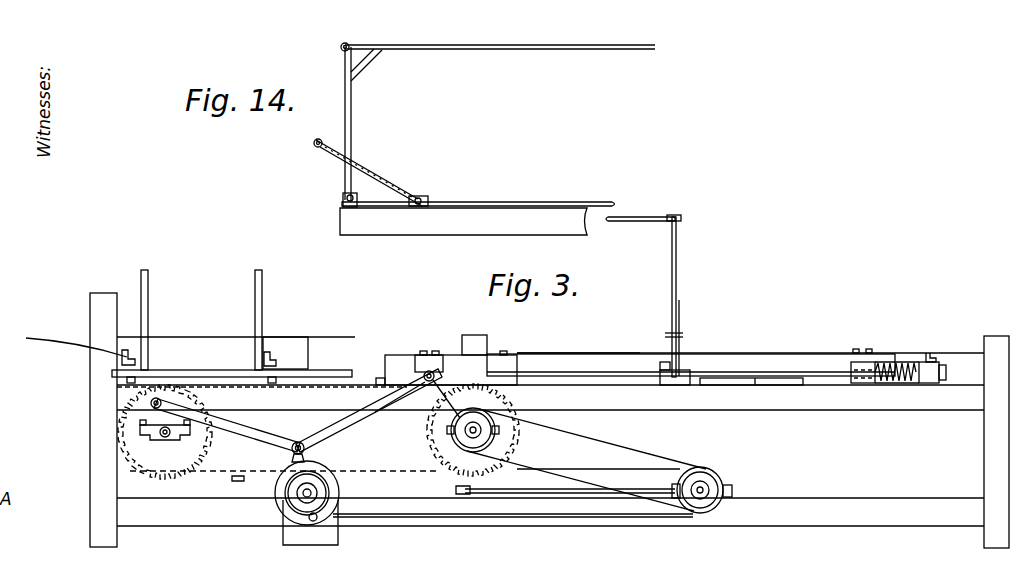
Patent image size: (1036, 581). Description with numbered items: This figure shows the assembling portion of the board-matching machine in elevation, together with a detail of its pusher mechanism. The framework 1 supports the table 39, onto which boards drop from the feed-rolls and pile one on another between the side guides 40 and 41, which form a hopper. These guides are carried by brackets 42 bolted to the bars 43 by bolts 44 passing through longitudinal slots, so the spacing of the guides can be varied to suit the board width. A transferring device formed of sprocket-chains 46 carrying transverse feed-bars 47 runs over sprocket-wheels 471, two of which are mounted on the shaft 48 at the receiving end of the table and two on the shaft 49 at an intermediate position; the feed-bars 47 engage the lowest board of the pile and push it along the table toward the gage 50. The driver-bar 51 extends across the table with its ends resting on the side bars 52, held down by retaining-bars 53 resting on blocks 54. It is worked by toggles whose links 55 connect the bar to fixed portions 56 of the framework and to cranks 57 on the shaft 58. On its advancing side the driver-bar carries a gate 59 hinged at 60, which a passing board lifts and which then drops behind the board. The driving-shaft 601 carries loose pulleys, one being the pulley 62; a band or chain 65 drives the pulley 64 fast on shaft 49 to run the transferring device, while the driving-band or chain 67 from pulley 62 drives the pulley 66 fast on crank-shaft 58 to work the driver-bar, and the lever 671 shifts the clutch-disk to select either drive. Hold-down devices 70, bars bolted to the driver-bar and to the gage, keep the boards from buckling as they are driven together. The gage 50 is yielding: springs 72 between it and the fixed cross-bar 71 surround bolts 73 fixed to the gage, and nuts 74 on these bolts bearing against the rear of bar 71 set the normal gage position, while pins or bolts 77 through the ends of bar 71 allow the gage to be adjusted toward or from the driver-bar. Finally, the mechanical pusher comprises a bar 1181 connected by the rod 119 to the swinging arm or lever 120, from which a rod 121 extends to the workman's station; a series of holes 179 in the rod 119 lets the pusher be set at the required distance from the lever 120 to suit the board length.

In FIG. 3, the framework 1 is at (1004, 383).
In FIG. 3, the table 39 is at (217, 374).
In FIG. 3, the side guide 40 is at (263, 290).
In FIG. 3, the side guide 41 is at (150, 290).
In FIG. 3, the bracket 42 is at (129, 357).
In FIG. 3, the bar 43 is at (312, 370).
In FIG. 3, the bolt 44 is at (273, 363).
In FIG. 3, the sprocket-chain 46 is at (379, 385).
In FIG. 3, the feed-bar 47 is at (170, 383).
In FIG. 3, the shaft 48 is at (118, 430).
In FIG. 3, the shaft 49 is at (504, 400).
In FIG. 3, the gage 50 is at (863, 364).
In FIG. 3, the driver-bar 51 is at (434, 374).
In FIG. 3, the side bar 52 is at (565, 395).
In FIG. 3, the retaining-bar 53 is at (489, 365).
In FIG. 3, the block 54 is at (430, 366).
In FIG. 3, the toggle link 55 is at (254, 430).
In FIG. 3, the fixed portion of framework 56 is at (116, 413).
In FIG. 3, the crank 57 is at (314, 522).
In FIG. 3, the shaft 58 is at (300, 490).
In FIG. 3, the gate 59 is at (380, 452).
In FIG. 3, the hinge 60 is at (463, 355).
In FIG. 3, the band-pulley or sprocket-wheel 62 is at (701, 467).
In FIG. 3, the band-pulley or sprocket-wheel 64 is at (452, 441).
In FIG. 3, the band or link chain 65 is at (690, 388).
In FIG. 3, the band-pulley or sprocket-wheel 66 is at (288, 495).
In FIG. 3, the driving-band or link chain 67 is at (500, 516).
In FIG. 3, the hold-down device 70 is at (642, 360).
In FIG. 3, the cross-bar 71 is at (931, 387).
In FIG. 3, the spring 72 is at (898, 374).
In FIG. 3, the bolt 73 is at (900, 385).
In FIG. 3, the nut 74 is at (946, 370).
In FIG. 3, the pin or bolt 77 is at (937, 357).
In FIG. 14, the rod 119 is at (380, 174).
In FIG. 3, the rod 119 is at (681, 320).
In FIG. 14, the swinging arm or lever 120 is at (357, 117).
In FIG. 3, the swinging arm or lever 120 is at (679, 262).
In FIG. 14, the rod 121 is at (535, 49).
In FIG. 3, the rod 121 is at (641, 216).
In FIG. 14, the hole 179 is at (320, 147).
In FIG. 3, the sprocket-wheel 471 is at (127, 455).
In FIG. 3, the driving-shaft 601 is at (718, 480).
In FIG. 3, the lever 671 is at (565, 493).
In FIG. 14, the pusher bar 1181 is at (432, 202).
In FIG. 3, the pusher bar 1181 is at (688, 372).